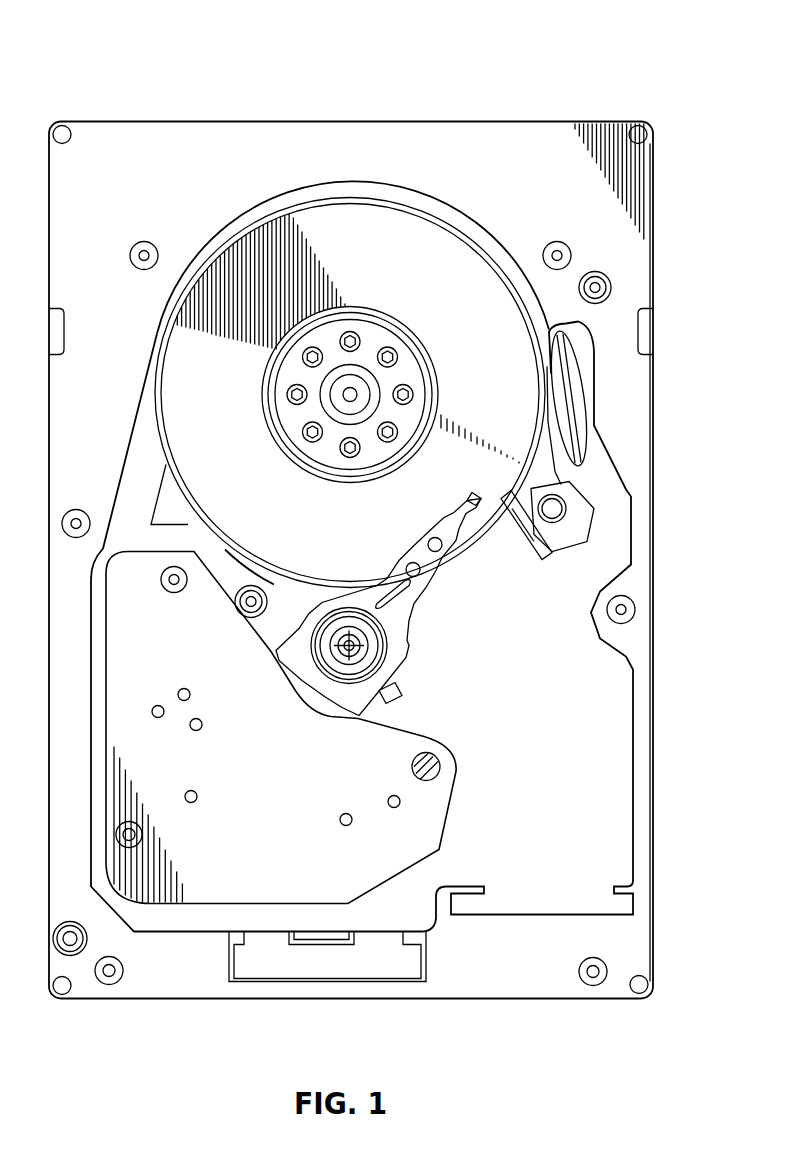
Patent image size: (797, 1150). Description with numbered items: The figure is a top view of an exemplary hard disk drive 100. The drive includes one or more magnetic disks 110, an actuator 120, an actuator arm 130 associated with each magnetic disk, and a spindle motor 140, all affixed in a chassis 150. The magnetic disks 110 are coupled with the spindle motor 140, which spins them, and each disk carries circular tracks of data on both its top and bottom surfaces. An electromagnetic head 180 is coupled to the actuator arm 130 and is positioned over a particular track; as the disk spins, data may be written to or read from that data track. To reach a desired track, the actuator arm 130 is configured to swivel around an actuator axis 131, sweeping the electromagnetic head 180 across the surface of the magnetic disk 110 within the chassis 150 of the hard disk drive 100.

The hard disk drive 100 is at (524, 46).
The magnetic disk 110 is at (428, 243).
The actuator 120 is at (432, 808).
The actuator arm 130 is at (425, 557).
The actuator axis 131 is at (378, 650).
The spindle motor 140 is at (340, 398).
The chassis 150 is at (157, 120).
The electromagnetic head 180 is at (472, 492).